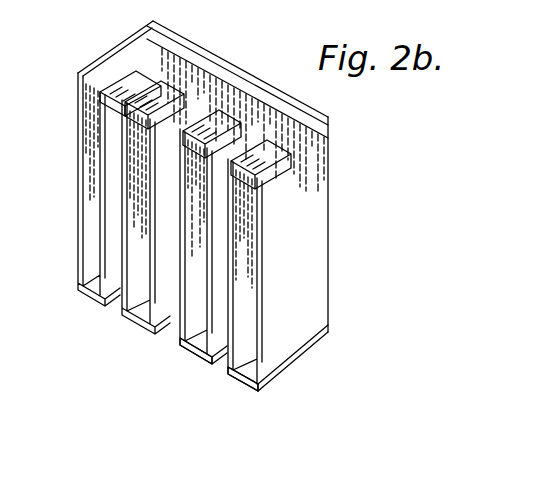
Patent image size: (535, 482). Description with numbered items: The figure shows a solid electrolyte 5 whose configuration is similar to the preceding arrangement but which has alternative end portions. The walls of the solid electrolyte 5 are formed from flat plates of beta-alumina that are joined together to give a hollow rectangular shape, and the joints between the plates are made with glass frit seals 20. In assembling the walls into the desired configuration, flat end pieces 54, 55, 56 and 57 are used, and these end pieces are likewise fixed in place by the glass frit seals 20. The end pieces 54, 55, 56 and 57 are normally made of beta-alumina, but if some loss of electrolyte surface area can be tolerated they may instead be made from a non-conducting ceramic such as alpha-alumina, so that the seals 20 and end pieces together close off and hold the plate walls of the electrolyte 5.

The solid electrolyte 5 is at (297, 303).
The glass frit seals 20 is at (172, 207).
The flat end piece 54 is at (173, 115).
The flat end piece 55 is at (252, 128).
The flat end piece 56 is at (186, 347).
The flat end piece 57 is at (245, 378).